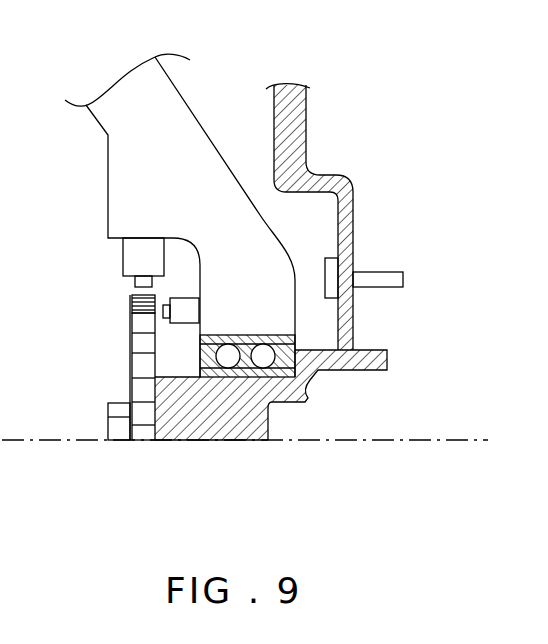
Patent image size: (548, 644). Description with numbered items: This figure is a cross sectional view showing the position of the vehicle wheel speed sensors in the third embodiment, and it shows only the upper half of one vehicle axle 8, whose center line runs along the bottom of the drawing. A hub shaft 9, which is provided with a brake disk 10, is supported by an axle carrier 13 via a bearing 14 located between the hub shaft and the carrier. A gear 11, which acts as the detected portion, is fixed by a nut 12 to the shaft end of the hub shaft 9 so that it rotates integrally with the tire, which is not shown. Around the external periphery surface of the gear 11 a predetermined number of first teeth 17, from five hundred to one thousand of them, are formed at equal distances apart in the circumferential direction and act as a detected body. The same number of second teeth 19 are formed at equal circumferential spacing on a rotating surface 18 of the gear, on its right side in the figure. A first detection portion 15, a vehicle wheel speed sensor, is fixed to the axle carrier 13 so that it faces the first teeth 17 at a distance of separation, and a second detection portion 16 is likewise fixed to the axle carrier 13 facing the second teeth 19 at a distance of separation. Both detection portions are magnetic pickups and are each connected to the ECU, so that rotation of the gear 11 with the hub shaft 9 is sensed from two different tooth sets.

The vehicle axle 8 is at (432, 443).
The hub shaft 9 is at (262, 425).
The brake disk 10 is at (306, 127).
The gear (rotor) 11 is at (132, 350).
The nut 12 is at (108, 415).
The axle carrier 13 is at (178, 117).
The bearing 14 is at (228, 362).
The first detection portion (vehicle wheel speed sensor) 15 is at (123, 262).
The second detection portion (vehicle wheel speed sensor) 16 is at (187, 298).
The first teeth 17 is at (132, 316).
The rotating surface 18 is at (158, 365).
The second teeth 19 is at (162, 318).